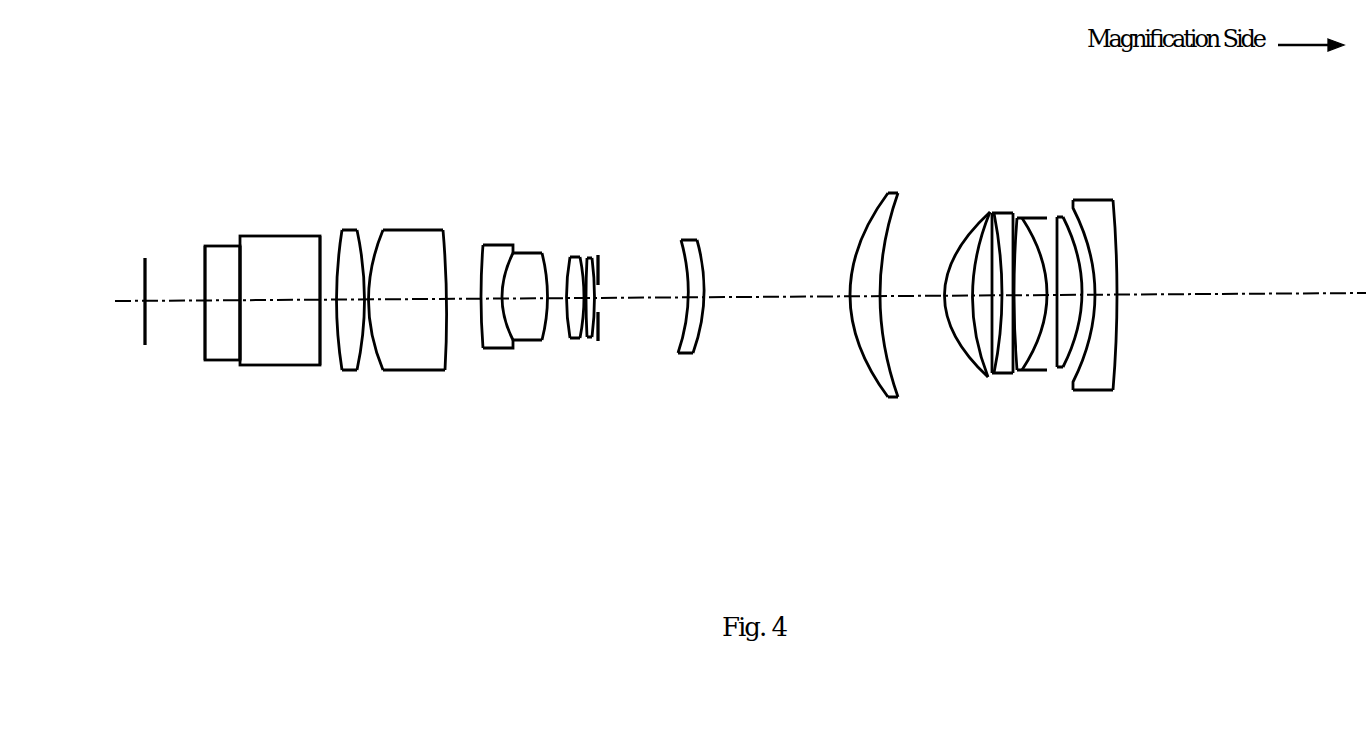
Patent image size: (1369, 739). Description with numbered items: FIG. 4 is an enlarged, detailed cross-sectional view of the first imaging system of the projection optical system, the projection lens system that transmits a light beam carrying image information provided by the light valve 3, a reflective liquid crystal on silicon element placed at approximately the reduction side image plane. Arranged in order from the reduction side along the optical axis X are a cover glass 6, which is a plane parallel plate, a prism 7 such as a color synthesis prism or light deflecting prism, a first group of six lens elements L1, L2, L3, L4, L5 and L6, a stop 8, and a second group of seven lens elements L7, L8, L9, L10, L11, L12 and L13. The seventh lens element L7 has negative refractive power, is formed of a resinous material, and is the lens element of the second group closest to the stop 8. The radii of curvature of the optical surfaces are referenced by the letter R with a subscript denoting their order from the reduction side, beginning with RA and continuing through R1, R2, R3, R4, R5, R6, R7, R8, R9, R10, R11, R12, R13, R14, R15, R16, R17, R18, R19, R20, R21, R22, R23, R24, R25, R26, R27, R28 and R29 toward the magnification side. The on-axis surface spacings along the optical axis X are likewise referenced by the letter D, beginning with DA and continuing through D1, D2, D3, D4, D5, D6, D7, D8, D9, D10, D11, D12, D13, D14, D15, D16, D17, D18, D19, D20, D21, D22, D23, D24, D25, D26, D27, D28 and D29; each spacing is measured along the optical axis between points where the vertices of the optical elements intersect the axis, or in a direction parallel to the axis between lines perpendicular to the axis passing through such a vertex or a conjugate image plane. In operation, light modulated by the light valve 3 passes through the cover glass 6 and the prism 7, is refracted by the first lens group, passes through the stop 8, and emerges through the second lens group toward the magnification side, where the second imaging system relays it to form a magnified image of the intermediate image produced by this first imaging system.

The light valve 3 is at (143, 330).
The cover glass 6 is at (216, 360).
The prism 7 is at (276, 365).
The stop 8 is at (599, 322).
The optical axis X is at (1318, 292).
The first lens element L1 is at (352, 299).
The second lens element L2 is at (408, 293).
The third lens element L3 is at (485, 286).
The fourth lens element L4 is at (512, 317).
The fifth lens element L5 is at (567, 305).
The sixth lens element L6 is at (617, 288).
The seventh lens element L7 is at (701, 284).
The eighth lens element L8 is at (855, 282).
The ninth lens element L9 is at (948, 305).
The tenth lens element L10 is at (979, 288).
The eleventh lens element L11 is at (1017, 291).
The twelfth lens element L12 is at (1074, 277).
The thirteenth lens element L13 is at (1127, 298).
The radius of curvature RA is at (147, 262).
The radius of curvature R1 is at (203, 250).
The radius of curvature R2 is at (240, 248).
The radius of curvature R3 is at (322, 238).
The radius of curvature R4 is at (342, 232).
The radius of curvature R5 is at (368, 252).
The radius of curvature R6 is at (386, 236).
The radius of curvature R7 is at (442, 236).
The radius of curvature R8 is at (483, 252).
The radius of curvature R9 is at (519, 250).
The radius of curvature R10 is at (507, 254).
The radius of curvature R11 is at (568, 256).
The radius of curvature R12 is at (578, 256).
The radius of curvature R13 is at (587, 258).
The radius of curvature R14 is at (593, 258).
The radius of curvature R15 is at (599, 262).
The radius of curvature R16 is at (682, 242).
The radius of curvature R17 is at (698, 242).
The radius of curvature R18 is at (851, 272).
The radius of curvature R19 is at (897, 200).
The radius of curvature R20 is at (949, 268).
The radius of curvature R21 is at (960, 245).
The radius of curvature R22 is at (973, 232).
The radius of curvature R23 is at (993, 215).
The radius of curvature R24 is at (1016, 217).
The radius of curvature R25 is at (1035, 216).
The radius of curvature R26 is at (1057, 216).
The radius of curvature R27 is at (1074, 216).
The radius of curvature R28 is at (1113, 205).
The radius of curvature R29 is at (1118, 250).
The on-axis surface spacing DA is at (176, 298).
The on-axis surface spacing D1 is at (210, 304).
The on-axis surface spacing D2 is at (257, 299).
The on-axis surface spacing D3 is at (330, 301).
The on-axis surface spacing D4 is at (362, 298).
The on-axis surface spacing D5 is at (370, 303).
The on-axis surface spacing D6 is at (390, 298).
The on-axis surface spacing D7 is at (463, 300).
The on-axis surface spacing D8 is at (490, 306).
The on-axis surface spacing D9 is at (497, 306).
The on-axis surface spacing D10 is at (520, 306).
The on-axis surface spacing D11 is at (563, 306).
The on-axis surface spacing D12 is at (575, 306).
The on-axis surface spacing D13 is at (588, 308).
The on-axis surface spacing D14 is at (594, 307).
The on-axis surface spacing D15 is at (628, 297).
The on-axis surface spacing D16 is at (698, 308).
The on-axis surface spacing D17 is at (758, 297).
The on-axis surface spacing D18 is at (848, 304).
The on-axis surface spacing D19 is at (900, 296).
The on-axis surface spacing D20 is at (945, 300).
The on-axis surface spacing D21 is at (962, 300).
The on-axis surface spacing D22 is at (982, 300).
The on-axis surface spacing D23 is at (1003, 300).
The on-axis surface spacing D24 is at (1028, 300).
The on-axis surface spacing D25 is at (1052, 300).
The on-axis surface spacing D26 is at (1105, 302).
The on-axis surface spacing D27 is at (1115, 303).
The on-axis surface spacing D28 is at (1120, 300).
The on-axis surface spacing D29 is at (1195, 293).